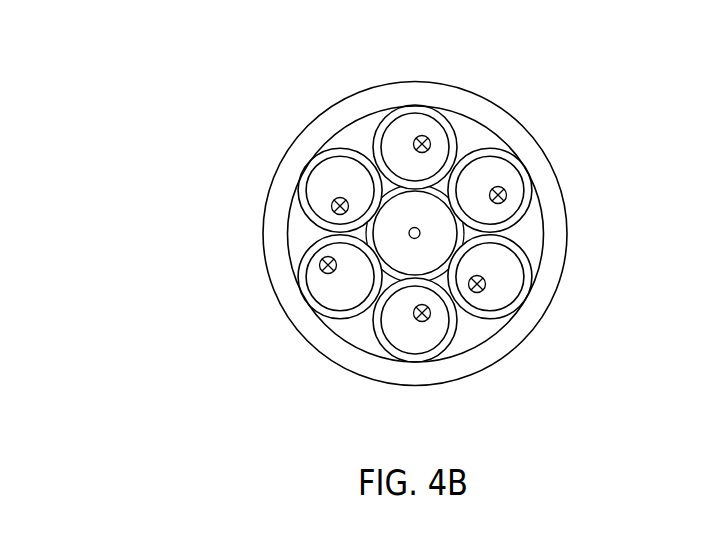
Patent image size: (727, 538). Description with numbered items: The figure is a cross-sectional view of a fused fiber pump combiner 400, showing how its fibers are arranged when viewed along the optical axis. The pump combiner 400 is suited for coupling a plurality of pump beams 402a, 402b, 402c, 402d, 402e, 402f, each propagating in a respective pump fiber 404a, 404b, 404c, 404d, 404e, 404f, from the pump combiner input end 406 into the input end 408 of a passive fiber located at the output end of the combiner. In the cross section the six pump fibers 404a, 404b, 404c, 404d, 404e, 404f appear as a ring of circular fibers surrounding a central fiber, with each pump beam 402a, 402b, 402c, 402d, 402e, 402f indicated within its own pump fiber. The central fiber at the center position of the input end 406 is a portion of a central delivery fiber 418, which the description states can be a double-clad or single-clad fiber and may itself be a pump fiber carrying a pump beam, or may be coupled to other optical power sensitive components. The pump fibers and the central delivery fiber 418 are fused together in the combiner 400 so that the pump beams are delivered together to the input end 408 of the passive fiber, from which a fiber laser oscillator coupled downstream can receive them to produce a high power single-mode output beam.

The fused fiber pump combiner 400 is at (146, 379).
The pump beam 402a is at (422, 136).
The pump beam 402b is at (507, 195).
The pump beam 402c is at (486, 284).
The pump beam 402d is at (428, 319).
The pump beam 402e is at (321, 271).
The pump beam 402f is at (332, 208).
The pump fiber 404a is at (443, 117).
The pump fiber 404b is at (501, 151).
The pump fiber 404c is at (493, 320).
The pump fiber 404d is at (445, 350).
The pump fiber 404e is at (302, 262).
The pump fiber 404f is at (298, 203).
The pump combiner input end 406 is at (358, 135).
The input end of passive fiber 408 is at (338, 152).
The central delivery fiber 418 is at (395, 280).